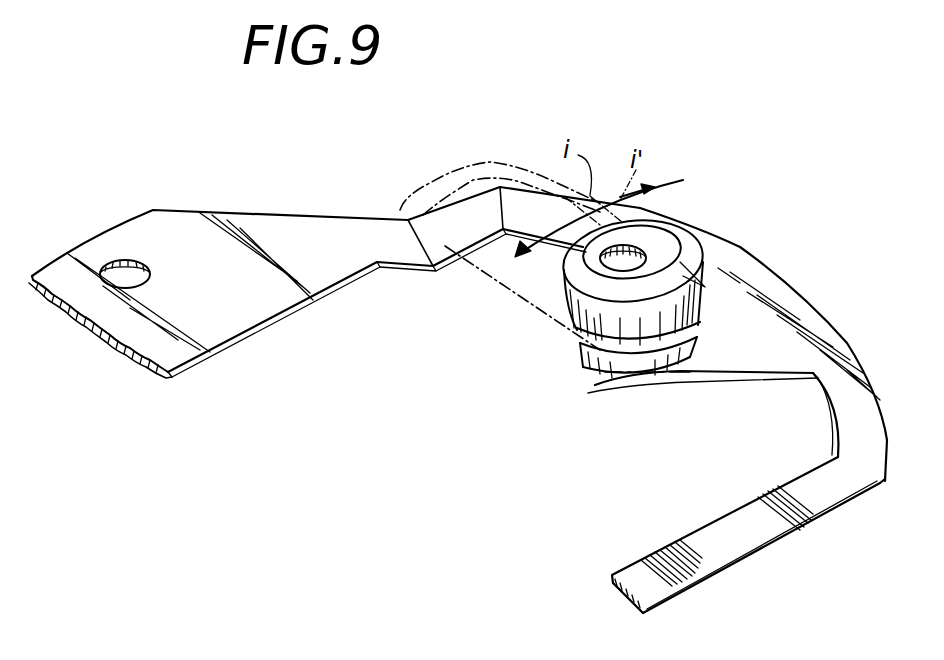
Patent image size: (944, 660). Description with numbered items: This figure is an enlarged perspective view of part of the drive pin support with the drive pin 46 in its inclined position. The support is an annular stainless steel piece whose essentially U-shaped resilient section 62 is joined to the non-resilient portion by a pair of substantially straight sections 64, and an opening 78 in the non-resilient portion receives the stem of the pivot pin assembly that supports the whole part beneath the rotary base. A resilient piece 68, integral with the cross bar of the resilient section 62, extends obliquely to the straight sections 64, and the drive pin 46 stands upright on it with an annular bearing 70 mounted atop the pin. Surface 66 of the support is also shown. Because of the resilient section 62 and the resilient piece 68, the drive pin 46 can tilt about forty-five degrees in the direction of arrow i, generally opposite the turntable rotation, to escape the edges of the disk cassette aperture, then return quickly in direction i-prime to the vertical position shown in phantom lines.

The drive pin 46 is at (628, 258).
The resilient section 62 is at (742, 245).
The straight sections 64 is at (453, 223).
The plate surface 66 is at (770, 288).
The resilient piece 68 is at (720, 362).
The annular bearing 70 is at (590, 313).
The opening 78 is at (125, 272).